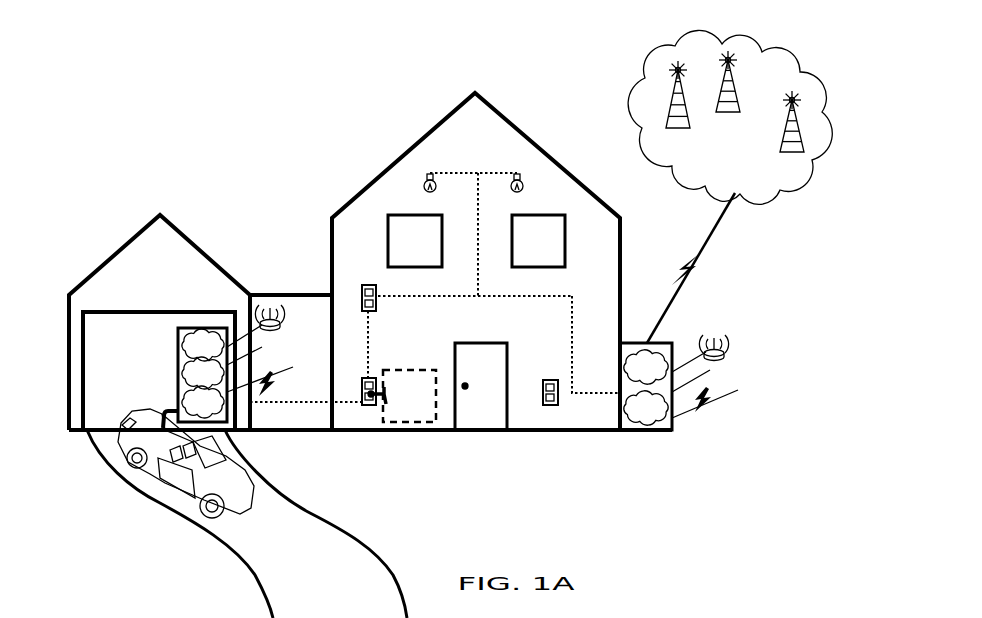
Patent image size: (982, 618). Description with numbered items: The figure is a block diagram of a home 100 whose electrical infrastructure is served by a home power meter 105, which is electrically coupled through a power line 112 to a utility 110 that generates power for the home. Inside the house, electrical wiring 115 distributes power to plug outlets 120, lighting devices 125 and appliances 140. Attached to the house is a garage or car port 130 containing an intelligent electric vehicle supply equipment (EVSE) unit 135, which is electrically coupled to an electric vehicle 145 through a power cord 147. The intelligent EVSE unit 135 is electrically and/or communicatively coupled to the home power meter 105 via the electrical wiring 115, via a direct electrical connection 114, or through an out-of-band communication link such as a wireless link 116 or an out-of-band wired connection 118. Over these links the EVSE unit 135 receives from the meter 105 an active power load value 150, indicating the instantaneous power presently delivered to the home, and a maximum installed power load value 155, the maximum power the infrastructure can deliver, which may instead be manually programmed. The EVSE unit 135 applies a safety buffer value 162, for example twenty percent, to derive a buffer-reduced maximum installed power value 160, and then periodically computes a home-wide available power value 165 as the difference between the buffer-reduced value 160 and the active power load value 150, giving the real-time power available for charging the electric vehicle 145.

The home 100 is at (410, 148).
The home power meter 105 is at (670, 345).
The utility 110 is at (778, 60).
The power line 112 is at (710, 238).
The direct electrical connection 114 is at (264, 386).
The electrical wiring 115 is at (262, 404).
The wireless link 116 is at (270, 328).
The out-of-band wired connection 118 is at (262, 346).
The plug outlets 120 is at (378, 291).
The lighting devices 125 is at (424, 178).
The garage or car port 130 is at (214, 261).
The intelligent electric vehicle supply equipment (EVSE) unit 135 is at (178, 347).
The appliances 140 is at (424, 370).
The electric vehicle 145 is at (217, 453).
The power cord 147 is at (170, 409).
The active power load value 150 is at (646, 367).
The maximum installed power load value 155 is at (646, 408).
The buffer-reduced maximum installed power value 160 is at (203, 345).
The safety buffer value 162 is at (203, 373).
The home-wide available power value 165 is at (203, 402).